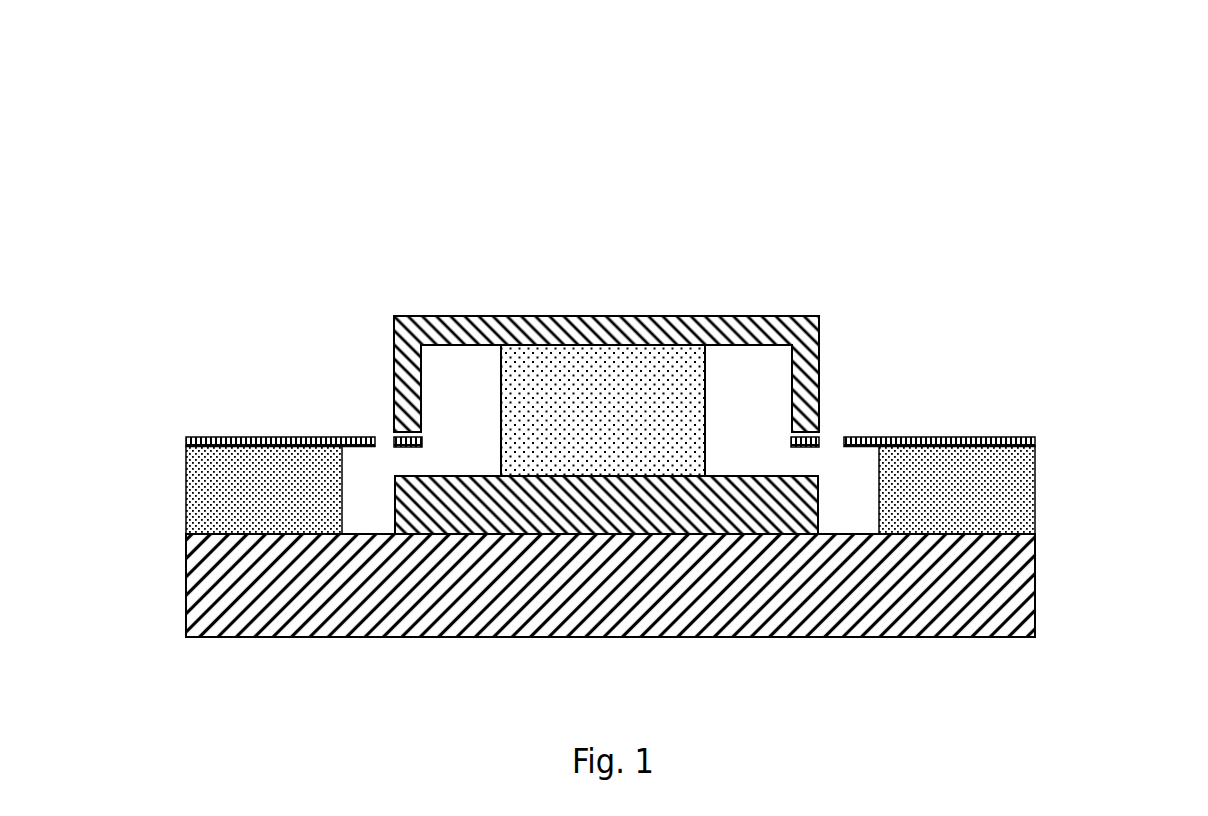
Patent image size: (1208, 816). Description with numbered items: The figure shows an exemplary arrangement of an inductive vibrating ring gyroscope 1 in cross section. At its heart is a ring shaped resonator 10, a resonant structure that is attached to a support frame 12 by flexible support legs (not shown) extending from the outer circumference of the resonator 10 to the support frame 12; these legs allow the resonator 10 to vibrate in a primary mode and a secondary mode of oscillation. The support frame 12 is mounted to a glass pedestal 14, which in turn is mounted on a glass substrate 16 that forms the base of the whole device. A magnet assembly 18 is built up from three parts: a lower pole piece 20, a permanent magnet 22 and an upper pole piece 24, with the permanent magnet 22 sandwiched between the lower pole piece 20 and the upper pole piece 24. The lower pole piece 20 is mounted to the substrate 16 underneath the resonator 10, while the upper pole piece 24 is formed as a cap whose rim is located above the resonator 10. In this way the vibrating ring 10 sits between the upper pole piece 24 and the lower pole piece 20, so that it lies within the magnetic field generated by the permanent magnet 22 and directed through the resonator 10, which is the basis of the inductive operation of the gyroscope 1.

The inductive vibrating ring gyroscope 1 is at (173, 148).
The ring shaped resonator 10 is at (390, 438).
The support frame 12 is at (263, 438).
The glass pedestal 14 is at (1010, 474).
The glass substrate 16 is at (225, 583).
The magnet assembly 18 is at (895, 288).
The lower pole piece 20 is at (792, 502).
The permanent magnet 22 is at (610, 400).
The upper pole piece 24 is at (455, 316).